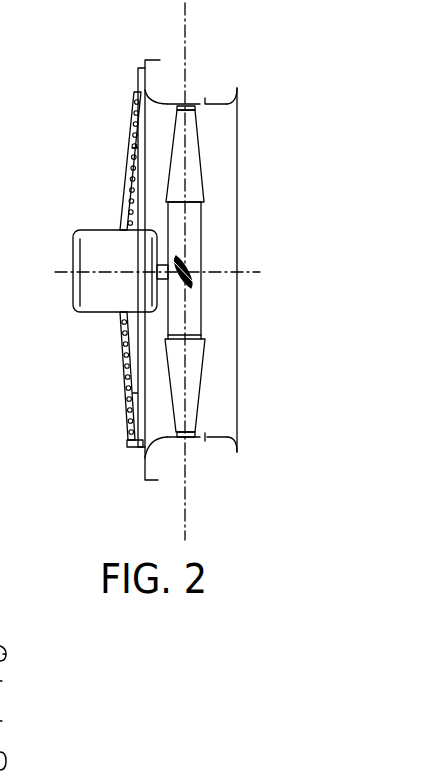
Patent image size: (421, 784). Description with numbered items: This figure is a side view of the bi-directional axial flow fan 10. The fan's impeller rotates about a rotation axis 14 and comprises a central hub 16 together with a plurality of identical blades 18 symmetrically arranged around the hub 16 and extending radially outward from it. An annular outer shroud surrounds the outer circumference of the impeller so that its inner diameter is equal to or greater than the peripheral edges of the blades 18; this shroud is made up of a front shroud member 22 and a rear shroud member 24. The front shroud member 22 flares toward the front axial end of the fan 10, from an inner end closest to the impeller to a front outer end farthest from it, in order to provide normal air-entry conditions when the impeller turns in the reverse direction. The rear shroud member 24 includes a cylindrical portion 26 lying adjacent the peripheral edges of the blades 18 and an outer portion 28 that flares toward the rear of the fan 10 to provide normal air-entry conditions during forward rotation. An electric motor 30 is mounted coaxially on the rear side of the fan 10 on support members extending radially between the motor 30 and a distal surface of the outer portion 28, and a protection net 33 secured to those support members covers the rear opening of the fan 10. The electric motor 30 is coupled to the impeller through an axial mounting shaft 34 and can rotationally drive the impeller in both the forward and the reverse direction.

The axial flow fan 10 is at (78, 132).
The rotation axis 14 is at (213, 273).
The central hub 16 is at (196, 229).
The blades 18 is at (198, 145).
The front shroud member 22 is at (228, 98).
The rear shroud member 24 is at (170, 100).
The cylindrical portion 26 is at (182, 440).
The outer portion 28 is at (152, 94).
The electric motor 30 is at (100, 230).
The protection net 33 is at (120, 352).
The axial mounting shaft 34 is at (158, 279).